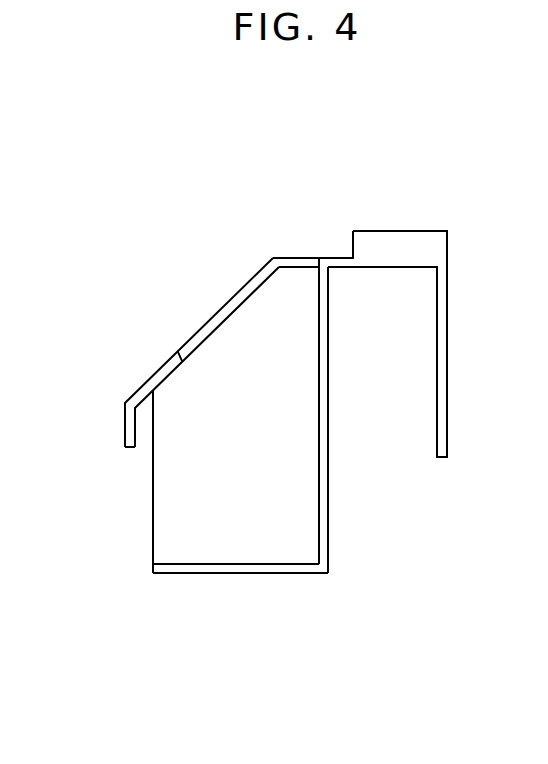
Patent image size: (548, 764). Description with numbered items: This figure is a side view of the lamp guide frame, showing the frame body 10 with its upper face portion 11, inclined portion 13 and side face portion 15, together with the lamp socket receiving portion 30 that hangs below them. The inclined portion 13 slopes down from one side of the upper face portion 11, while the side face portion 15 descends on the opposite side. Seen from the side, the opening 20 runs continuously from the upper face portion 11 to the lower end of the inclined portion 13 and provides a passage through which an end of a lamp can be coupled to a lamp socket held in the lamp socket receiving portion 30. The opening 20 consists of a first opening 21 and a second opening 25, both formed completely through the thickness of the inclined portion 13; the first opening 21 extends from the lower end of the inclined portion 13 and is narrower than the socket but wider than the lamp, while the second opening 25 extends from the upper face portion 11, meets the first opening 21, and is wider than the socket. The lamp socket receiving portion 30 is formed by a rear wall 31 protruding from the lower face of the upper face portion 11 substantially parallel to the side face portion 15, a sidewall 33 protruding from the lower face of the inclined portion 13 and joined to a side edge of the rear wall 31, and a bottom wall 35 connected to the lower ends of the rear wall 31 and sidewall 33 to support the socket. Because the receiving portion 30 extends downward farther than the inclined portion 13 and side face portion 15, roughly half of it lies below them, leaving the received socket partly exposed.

The frame body 10 is at (297, 276).
The upper face portion 11 is at (337, 257).
The inclined portion 13 is at (248, 282).
The side face portion 15 is at (398, 297).
The opening 20 is at (136, 323).
The first opening 21 is at (162, 375).
The second opening 25 is at (198, 338).
The lamp socket receiving portion 30 is at (258, 475).
The rear wall 31 is at (328, 528).
The sidewall 33 is at (268, 528).
The bottom wall 35 is at (247, 568).